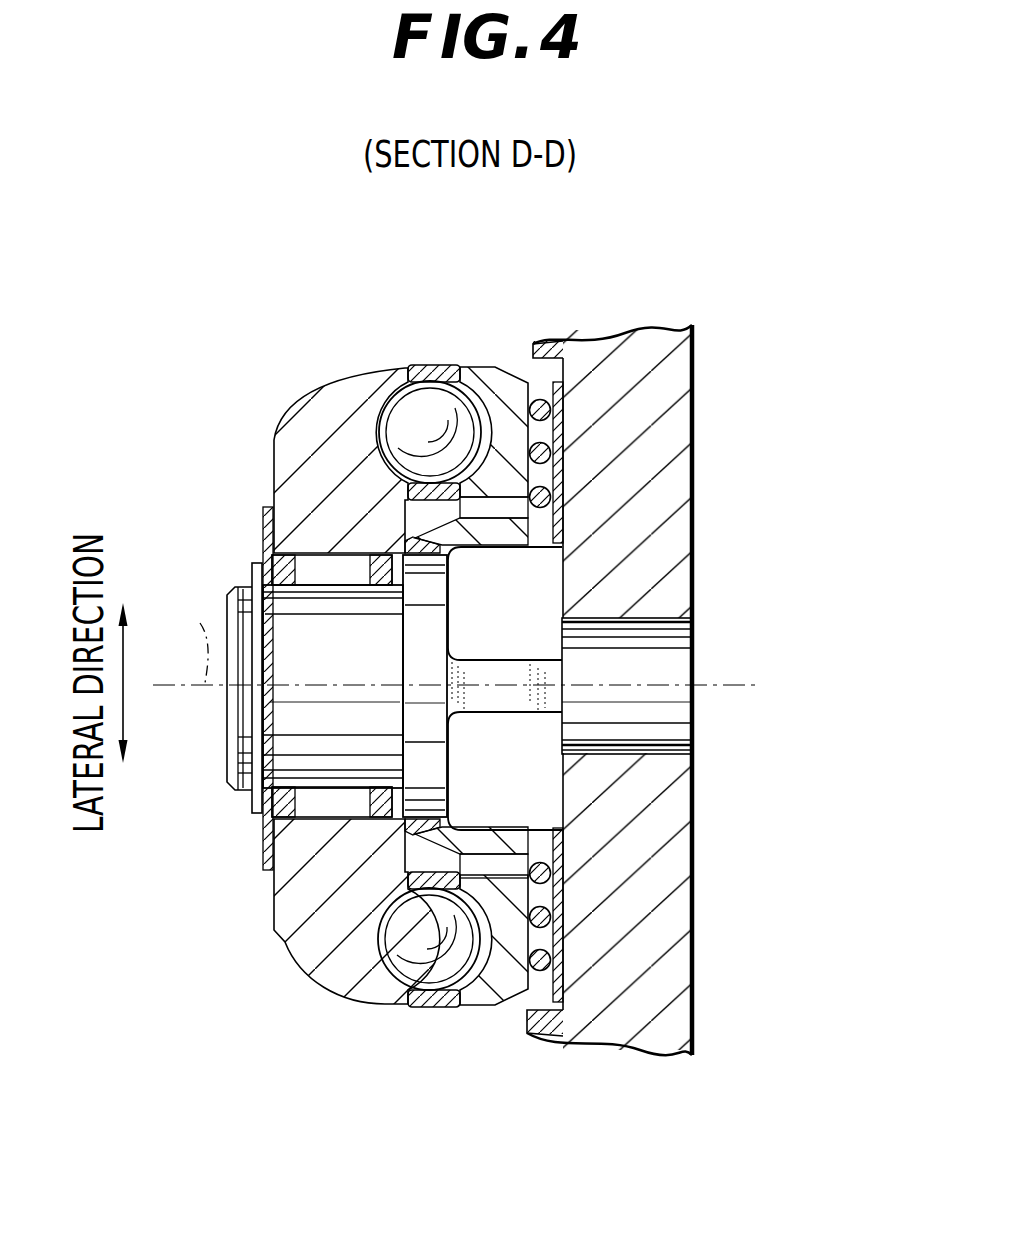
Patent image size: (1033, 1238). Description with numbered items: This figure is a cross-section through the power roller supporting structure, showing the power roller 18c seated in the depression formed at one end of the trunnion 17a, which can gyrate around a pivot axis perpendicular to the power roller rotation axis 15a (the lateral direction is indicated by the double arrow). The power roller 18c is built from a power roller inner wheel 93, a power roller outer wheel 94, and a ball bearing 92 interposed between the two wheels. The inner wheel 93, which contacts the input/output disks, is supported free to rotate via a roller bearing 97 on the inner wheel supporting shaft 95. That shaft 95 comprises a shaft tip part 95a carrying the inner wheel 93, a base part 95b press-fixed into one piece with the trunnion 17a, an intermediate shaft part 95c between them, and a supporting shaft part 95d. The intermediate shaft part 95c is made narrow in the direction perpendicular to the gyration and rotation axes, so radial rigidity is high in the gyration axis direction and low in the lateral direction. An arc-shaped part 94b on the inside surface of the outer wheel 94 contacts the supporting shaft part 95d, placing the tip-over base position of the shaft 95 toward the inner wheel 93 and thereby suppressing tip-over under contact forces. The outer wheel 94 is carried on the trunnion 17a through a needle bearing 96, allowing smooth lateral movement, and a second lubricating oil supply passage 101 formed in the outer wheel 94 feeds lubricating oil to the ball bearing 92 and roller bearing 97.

The power roller rotation axis 15a is at (181, 633).
The trunnion 17a is at (640, 360).
The power roller 18c is at (305, 380).
The ball bearing 92 is at (403, 963).
The power roller inner wheel 93 is at (320, 957).
The power roller outer wheel 94 is at (493, 980).
The arc-shaped part 94b is at (322, 565).
The inner wheel supporting shaft 95 is at (308, 640).
The shaft tip part 95a is at (252, 787).
The base part 95b is at (678, 650).
The intermediate shaft part 95c is at (503, 670).
The supporting shaft part 95d is at (428, 753).
The needle bearing 96 is at (548, 452).
The roller bearing 97 is at (405, 538).
The second lubricating oil supply passage 101 is at (482, 865).